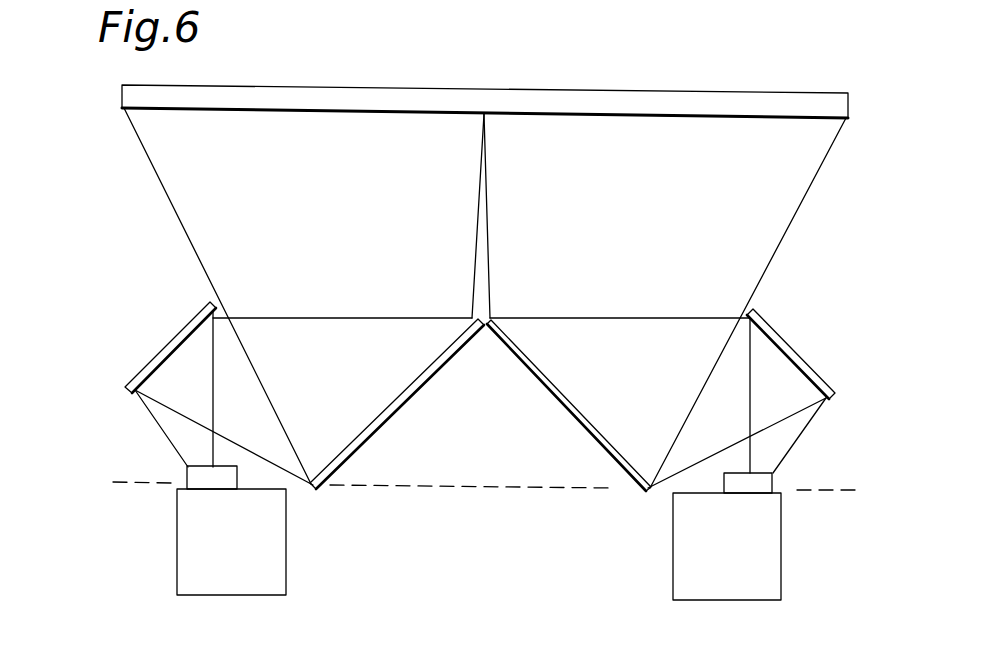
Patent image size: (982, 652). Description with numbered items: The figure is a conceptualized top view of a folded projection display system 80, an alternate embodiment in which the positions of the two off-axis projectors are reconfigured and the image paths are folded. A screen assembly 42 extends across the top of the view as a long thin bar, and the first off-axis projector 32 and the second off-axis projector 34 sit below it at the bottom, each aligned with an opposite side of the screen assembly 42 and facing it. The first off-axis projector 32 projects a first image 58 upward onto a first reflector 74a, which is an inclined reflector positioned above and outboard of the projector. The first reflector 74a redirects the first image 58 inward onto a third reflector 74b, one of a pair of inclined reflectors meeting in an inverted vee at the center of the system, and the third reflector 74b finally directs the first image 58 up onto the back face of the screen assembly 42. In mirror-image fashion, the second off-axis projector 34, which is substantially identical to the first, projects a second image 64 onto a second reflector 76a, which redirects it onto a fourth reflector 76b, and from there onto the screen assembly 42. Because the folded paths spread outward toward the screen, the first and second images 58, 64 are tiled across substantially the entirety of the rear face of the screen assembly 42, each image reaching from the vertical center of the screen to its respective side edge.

The screen assembly 42 is at (357, 86).
The folded projection display system 80 is at (101, 167).
The first image 58 is at (377, 267).
The second image 64 is at (573, 267).
The first reflector 74a is at (157, 357).
The third reflector 74b is at (317, 490).
The second reflector 76a is at (806, 358).
The fourth reflector 76b is at (641, 490).
The first off-axis projector 32 is at (216, 557).
The second off-axis projector 34 is at (711, 562).